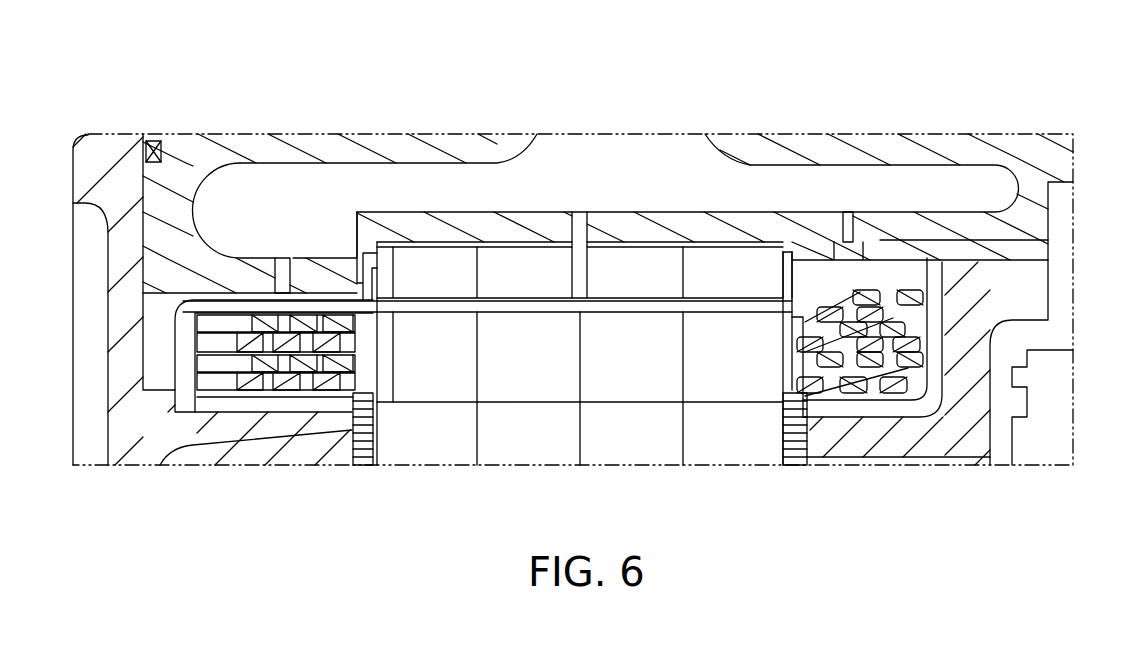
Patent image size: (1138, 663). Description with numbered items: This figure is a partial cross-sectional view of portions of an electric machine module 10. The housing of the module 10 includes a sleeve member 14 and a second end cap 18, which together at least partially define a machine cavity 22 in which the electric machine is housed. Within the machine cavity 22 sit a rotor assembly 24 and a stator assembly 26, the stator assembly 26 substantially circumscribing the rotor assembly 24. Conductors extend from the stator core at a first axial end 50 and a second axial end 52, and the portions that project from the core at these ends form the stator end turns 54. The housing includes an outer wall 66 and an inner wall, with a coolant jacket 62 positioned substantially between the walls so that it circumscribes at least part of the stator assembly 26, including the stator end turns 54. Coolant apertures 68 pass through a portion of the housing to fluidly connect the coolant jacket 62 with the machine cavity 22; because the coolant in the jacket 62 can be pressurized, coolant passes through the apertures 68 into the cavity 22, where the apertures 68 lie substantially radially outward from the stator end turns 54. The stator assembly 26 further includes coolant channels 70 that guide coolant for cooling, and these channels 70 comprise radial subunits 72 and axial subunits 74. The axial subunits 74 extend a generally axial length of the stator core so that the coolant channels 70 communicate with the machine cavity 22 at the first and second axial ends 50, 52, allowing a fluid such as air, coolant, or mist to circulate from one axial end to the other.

The electric machine module 10 is at (908, 76).
The sleeve member 14 is at (236, 136).
The second end cap 18 is at (85, 137).
The machine cavity 22 is at (873, 278).
The rotor assembly 24 is at (440, 438).
The stator assembly 26 is at (630, 380).
The first axial end of the stator core 50 is at (351, 266).
The second axial end of the stator core 52 is at (797, 287).
The stator end turns 54 is at (255, 385).
The coolant jacket 62 is at (664, 163).
The outer wall 66 is at (455, 136).
The coolant apertures 68 is at (287, 255).
The coolant channel 70 is at (553, 297).
The radial subunits 72 is at (583, 277).
The axial subunits 74 is at (503, 305).